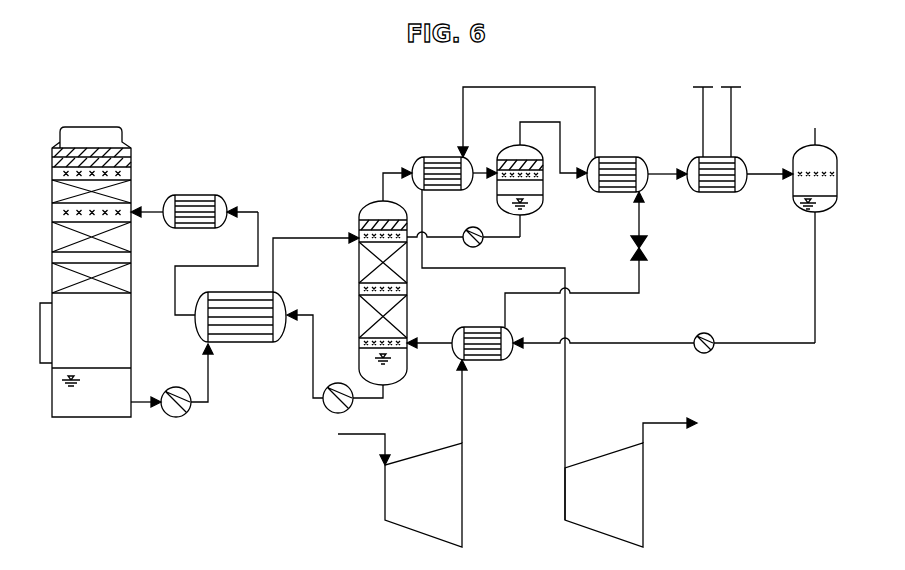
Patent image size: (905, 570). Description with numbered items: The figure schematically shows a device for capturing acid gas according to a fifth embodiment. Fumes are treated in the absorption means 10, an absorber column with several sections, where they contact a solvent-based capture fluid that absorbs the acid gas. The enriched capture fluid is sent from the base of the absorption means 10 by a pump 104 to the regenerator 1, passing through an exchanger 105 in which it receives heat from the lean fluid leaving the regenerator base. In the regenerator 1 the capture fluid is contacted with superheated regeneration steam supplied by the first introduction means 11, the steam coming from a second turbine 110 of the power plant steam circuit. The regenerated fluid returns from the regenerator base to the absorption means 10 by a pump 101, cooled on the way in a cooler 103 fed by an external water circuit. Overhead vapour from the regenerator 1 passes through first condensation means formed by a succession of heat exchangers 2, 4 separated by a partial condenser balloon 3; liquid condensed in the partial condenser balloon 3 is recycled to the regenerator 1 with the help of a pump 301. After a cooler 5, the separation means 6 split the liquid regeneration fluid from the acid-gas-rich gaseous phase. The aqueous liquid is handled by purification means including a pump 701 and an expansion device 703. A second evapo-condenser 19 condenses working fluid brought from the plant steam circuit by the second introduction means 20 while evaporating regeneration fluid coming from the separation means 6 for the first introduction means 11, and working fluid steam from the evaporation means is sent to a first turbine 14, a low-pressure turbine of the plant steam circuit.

The regenerator 1 is at (414, 359).
The heat exchanger 2 is at (437, 152).
The partial condenser balloon 3 is at (498, 147).
The heat exchanger 4 is at (618, 153).
The cooler 5 is at (708, 153).
The separation means 6 is at (788, 156).
The absorption means 10 is at (138, 298).
The first introduction means 11 is at (432, 341).
The first turbine 14 is at (650, 495).
The second evapo-condenser 19 is at (483, 367).
The second introduction means 20 is at (460, 400).
The pump 101 is at (338, 377).
The cooler 103 is at (195, 186).
The pump 104 is at (175, 380).
The exchanger 105 is at (243, 352).
The second turbine 110 is at (470, 495).
The pump 301 is at (495, 248).
The pump 701 is at (703, 362).
The expansion device 703 is at (657, 251).